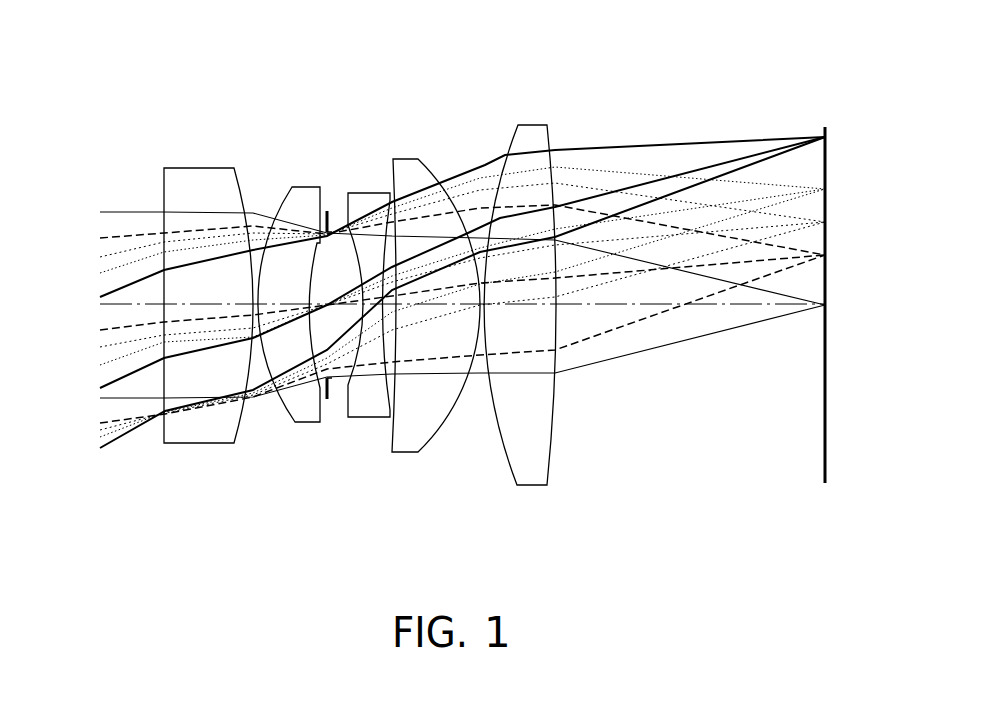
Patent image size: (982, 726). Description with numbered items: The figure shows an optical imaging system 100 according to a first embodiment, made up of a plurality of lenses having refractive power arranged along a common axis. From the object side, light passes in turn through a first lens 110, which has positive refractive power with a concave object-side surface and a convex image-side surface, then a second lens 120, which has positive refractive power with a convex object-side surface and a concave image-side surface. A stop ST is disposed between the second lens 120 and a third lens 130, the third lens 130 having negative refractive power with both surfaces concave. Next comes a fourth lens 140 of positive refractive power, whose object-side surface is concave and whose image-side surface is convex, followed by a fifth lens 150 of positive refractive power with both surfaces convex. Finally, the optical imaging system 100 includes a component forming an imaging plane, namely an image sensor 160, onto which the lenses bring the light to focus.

The optical imaging system 100 is at (420, 127).
The first lens 110 is at (195, 435).
The second lens 120 is at (295, 413).
The stop ST is at (330, 401).
The third lens 130 is at (368, 410).
The fourth lens 140 is at (408, 445).
The fifth lens 150 is at (532, 475).
The image sensor 160 is at (823, 452).